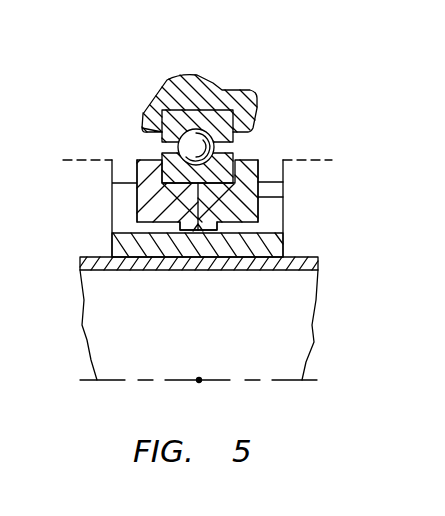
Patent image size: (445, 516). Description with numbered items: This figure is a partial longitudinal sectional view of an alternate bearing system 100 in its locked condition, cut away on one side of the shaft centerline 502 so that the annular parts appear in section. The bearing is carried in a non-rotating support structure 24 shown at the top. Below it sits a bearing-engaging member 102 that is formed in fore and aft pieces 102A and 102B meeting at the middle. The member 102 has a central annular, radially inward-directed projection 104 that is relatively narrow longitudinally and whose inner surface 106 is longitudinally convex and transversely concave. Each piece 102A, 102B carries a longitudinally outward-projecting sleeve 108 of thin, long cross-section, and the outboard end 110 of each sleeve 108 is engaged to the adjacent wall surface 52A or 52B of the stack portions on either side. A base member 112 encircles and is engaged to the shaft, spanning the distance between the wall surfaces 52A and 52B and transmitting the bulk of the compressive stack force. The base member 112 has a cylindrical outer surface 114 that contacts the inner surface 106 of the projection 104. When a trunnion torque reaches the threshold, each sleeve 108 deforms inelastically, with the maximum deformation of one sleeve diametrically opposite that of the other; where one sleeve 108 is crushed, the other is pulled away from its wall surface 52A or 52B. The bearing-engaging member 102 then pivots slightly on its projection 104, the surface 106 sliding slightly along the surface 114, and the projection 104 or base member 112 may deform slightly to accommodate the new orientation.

The support structure 24 is at (196, 84).
The alternate bearing system 100 is at (207, 178).
The bearing-engaging member 102 is at (204, 172).
The fore piece of bearing-engaging member 102A is at (152, 217).
The aft piece of bearing-engaging member 102B is at (247, 216).
The fore wall surface 52A is at (113, 160).
The aft wall surface 52B is at (285, 160).
The projection 104 is at (202, 232).
The inner surface 106 is at (204, 231).
The sleeve 108 is at (274, 190).
The outboard end 110 is at (284, 197).
The base member 112 is at (124, 258).
The cylindrical outer surface 114 is at (140, 250).
The centerline of the shaft 502 is at (231, 381).